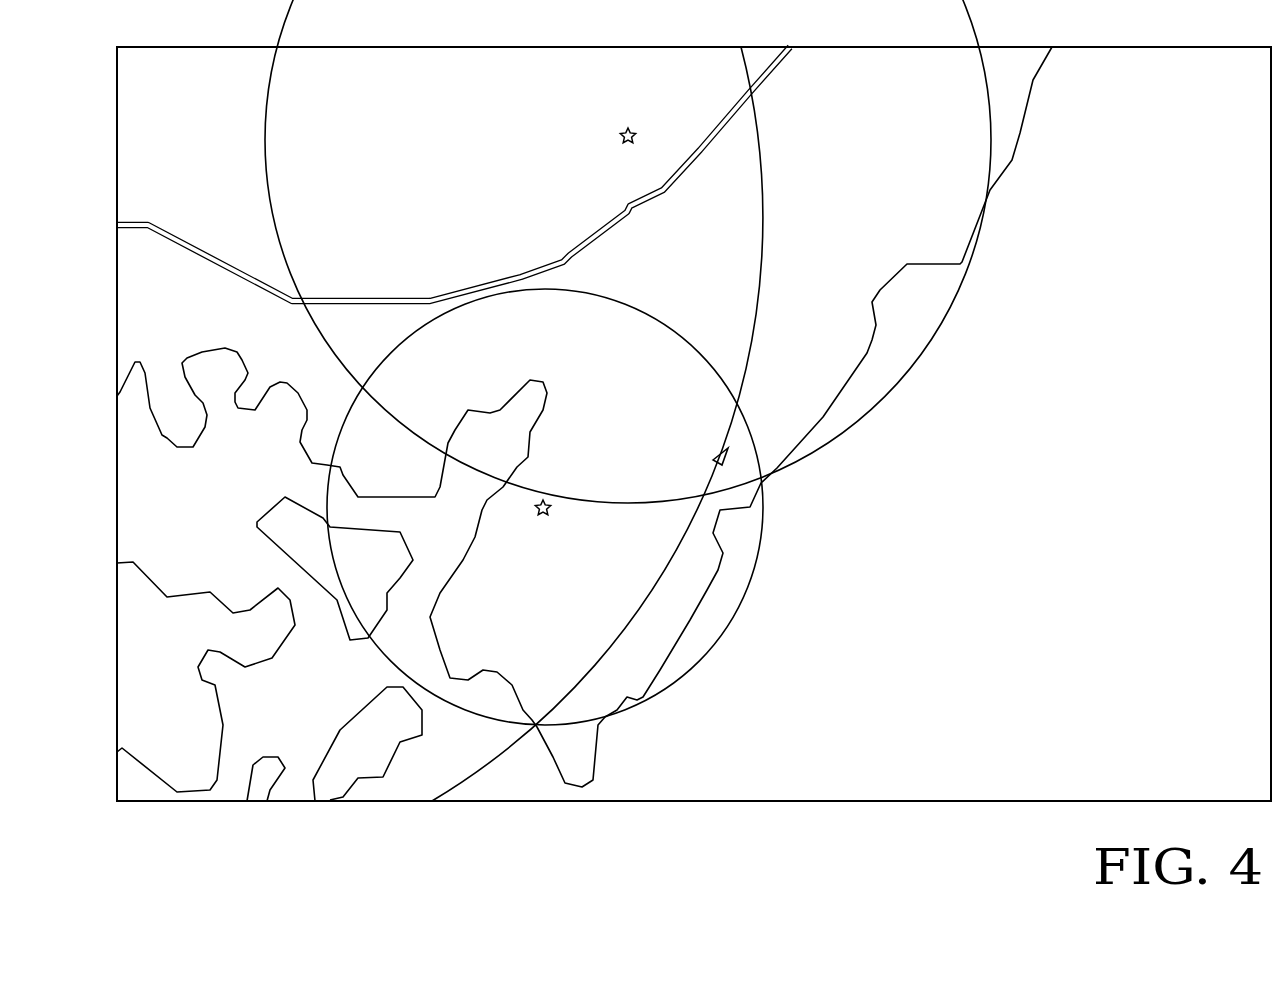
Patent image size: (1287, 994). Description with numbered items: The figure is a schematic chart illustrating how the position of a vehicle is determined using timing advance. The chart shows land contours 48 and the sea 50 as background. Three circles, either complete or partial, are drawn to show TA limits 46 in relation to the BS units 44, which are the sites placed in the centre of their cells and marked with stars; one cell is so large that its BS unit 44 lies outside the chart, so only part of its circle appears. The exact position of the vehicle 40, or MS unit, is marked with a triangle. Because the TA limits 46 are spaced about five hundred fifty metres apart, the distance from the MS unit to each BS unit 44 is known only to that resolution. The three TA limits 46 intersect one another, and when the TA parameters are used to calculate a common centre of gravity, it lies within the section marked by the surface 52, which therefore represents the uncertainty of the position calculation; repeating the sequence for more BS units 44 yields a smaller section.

The vehicle 40 is at (714, 452).
The BS units 44 is at (633, 129).
The TA limits 46 is at (767, 258).
The land contours 48 is at (1022, 133).
The sea 50 is at (694, 424).
The surface 52 is at (737, 437).